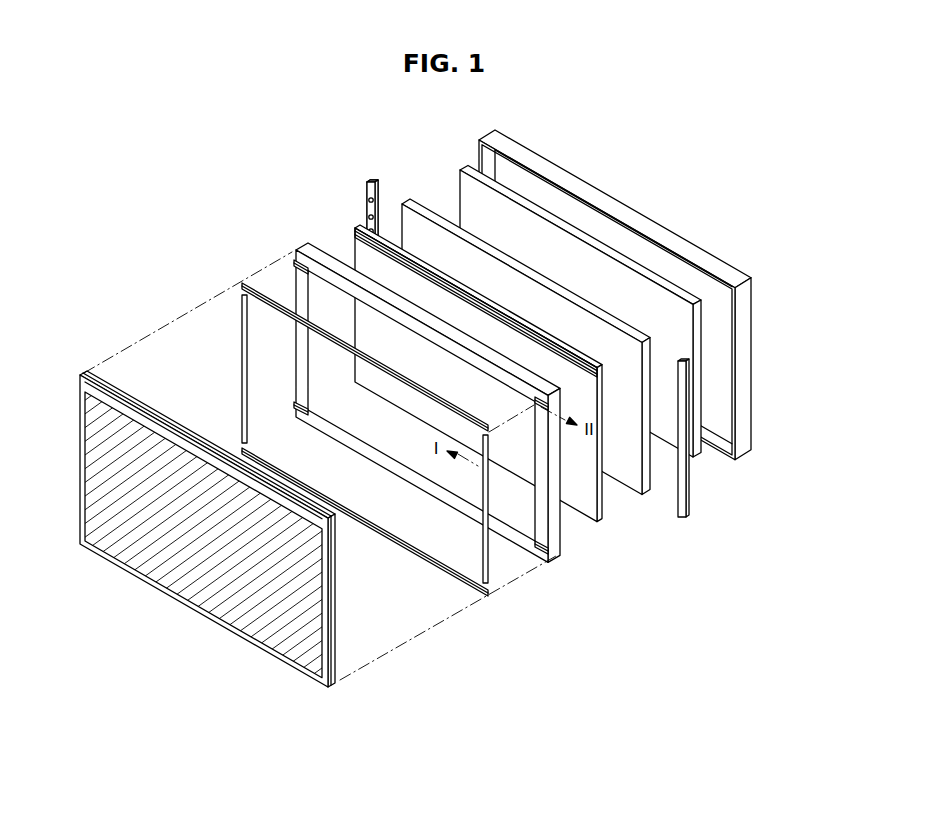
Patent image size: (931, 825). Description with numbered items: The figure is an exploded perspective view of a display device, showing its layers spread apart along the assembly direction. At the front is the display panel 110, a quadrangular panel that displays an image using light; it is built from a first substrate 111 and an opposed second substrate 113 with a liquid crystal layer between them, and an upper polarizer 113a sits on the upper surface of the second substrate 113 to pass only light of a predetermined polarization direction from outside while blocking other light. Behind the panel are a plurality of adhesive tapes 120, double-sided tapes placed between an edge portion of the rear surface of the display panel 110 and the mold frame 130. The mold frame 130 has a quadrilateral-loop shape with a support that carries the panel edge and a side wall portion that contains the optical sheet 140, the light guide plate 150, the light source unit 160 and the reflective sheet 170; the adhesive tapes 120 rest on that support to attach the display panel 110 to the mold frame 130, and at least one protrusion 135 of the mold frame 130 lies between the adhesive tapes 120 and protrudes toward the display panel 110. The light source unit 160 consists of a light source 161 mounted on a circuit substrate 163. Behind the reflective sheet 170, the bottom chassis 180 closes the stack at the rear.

The display panel 110 is at (200, 492).
The first substrate 111 is at (337, 662).
The second substrate 113 is at (304, 668).
The upper polarizer 113a is at (272, 636).
The adhesive tape 120 is at (470, 580).
The mold frame 130 is at (430, 426).
The protrusion 135 is at (538, 550).
The optical sheet 140 is at (582, 503).
The light guide plate 150 is at (625, 478).
The light source unit 160 is at (385, 179).
The light source 161 is at (376, 200).
The circuit substrate 163 is at (688, 499).
The reflective sheet 170 is at (693, 455).
The bottom chassis 180 is at (745, 396).